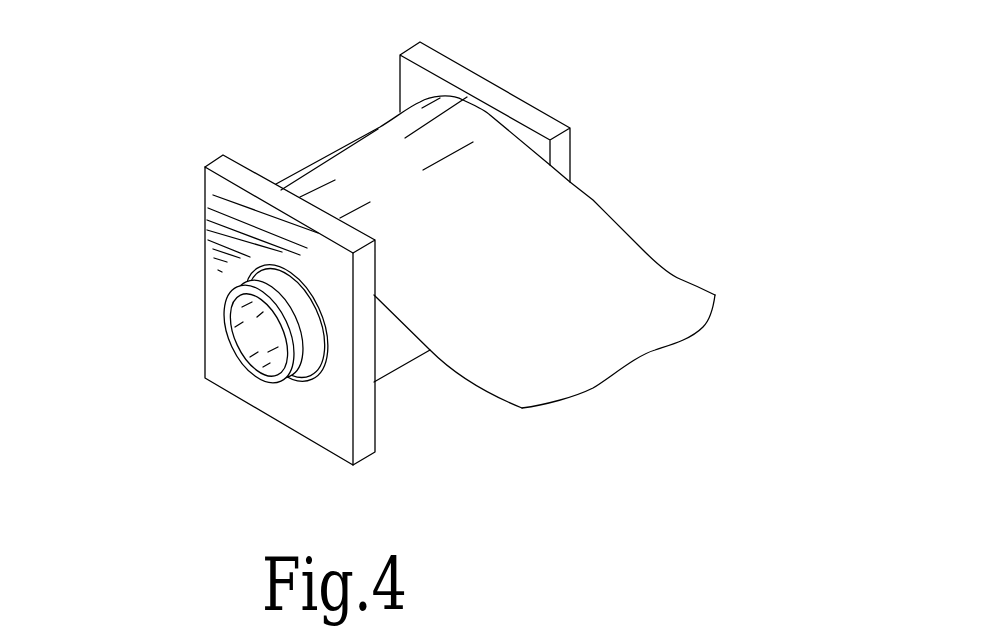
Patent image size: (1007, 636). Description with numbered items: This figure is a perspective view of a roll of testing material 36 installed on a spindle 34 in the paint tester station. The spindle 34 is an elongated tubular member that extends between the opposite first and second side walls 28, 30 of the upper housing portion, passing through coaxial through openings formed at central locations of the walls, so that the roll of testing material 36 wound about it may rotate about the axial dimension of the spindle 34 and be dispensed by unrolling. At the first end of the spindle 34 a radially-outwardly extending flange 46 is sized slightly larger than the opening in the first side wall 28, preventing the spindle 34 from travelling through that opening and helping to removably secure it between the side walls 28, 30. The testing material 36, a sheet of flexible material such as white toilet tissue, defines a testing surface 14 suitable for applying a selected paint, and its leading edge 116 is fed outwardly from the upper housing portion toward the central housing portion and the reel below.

The testing surface 14 is at (548, 328).
The first side wall 28 is at (214, 283).
The second side wall 30 is at (523, 98).
The spindle 34 is at (225, 322).
The testing material 36 is at (593, 200).
The flange 46 is at (307, 378).
The leading edge 116 is at (593, 388).